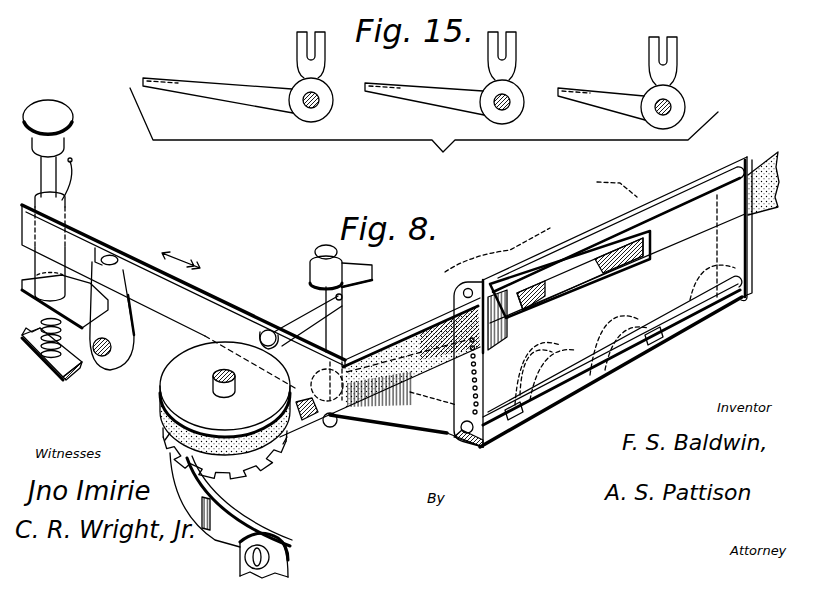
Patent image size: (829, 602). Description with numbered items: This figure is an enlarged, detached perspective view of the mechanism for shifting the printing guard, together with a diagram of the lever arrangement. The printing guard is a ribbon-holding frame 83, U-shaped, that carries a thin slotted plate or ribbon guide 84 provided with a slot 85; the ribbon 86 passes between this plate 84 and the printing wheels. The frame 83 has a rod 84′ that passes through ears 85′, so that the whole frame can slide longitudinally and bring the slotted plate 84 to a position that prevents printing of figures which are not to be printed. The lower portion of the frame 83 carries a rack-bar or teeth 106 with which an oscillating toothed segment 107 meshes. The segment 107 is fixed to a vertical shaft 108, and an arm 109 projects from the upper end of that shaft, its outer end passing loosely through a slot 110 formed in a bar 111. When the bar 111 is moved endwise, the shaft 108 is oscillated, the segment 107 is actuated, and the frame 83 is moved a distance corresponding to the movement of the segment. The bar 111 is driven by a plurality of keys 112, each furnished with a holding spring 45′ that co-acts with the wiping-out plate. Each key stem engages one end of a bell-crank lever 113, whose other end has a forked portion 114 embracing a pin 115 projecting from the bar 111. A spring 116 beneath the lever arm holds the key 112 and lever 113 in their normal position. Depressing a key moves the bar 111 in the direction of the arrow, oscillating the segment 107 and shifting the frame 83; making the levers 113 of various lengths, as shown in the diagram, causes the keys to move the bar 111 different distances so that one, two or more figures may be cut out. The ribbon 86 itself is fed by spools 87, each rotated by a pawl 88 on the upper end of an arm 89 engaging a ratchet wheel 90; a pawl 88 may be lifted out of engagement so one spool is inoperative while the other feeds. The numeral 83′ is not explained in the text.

In FIG. 8, the keys 112 is at (62, 118).
In FIG. 8, the holding springs 45′ is at (72, 163).
In FIG. 8, the bar 111 is at (193, 300).
In FIG. 8, the pins 115 is at (64, 311).
In FIG. 15, the bell-crank levers 113 is at (310, 72).
In FIG. 8, the bell-crank levers 113 is at (106, 361).
In FIG. 15, the forked portions 114 is at (312, 46).
In FIG. 8, the forked portions 114 is at (108, 254).
In FIG. 8, the springs 116 is at (53, 362).
In FIG. 8, the slot 110 is at (260, 339).
In FIG. 8, the arm 109 is at (287, 318).
In FIG. 8, the vertical shaft 108 is at (338, 330).
In FIG. 8, the spools 87 is at (185, 356).
In FIG. 8, the ratchet wheel 90 is at (282, 467).
In FIG. 8, the pawls 88 is at (205, 530).
In FIG. 8, the arms 89 is at (286, 568).
In FIG. 8, the ribbon 86 is at (433, 322).
In FIG. 8, the oscillating toothed segment 107 is at (406, 432).
In FIG. 8, the ribbon-holding frame 83 is at (742, 262).
In FIG. 8, the chain 83′ is at (455, 378).
In FIG. 8, the slotted plate 84 is at (715, 176).
In FIG. 8, the rod 84′ is at (687, 297).
In FIG. 8, the slot 85 is at (623, 241).
In FIG. 8, the ears 85′ is at (513, 416).
In FIG. 8, the rack-bar or teeth 106 is at (568, 362).